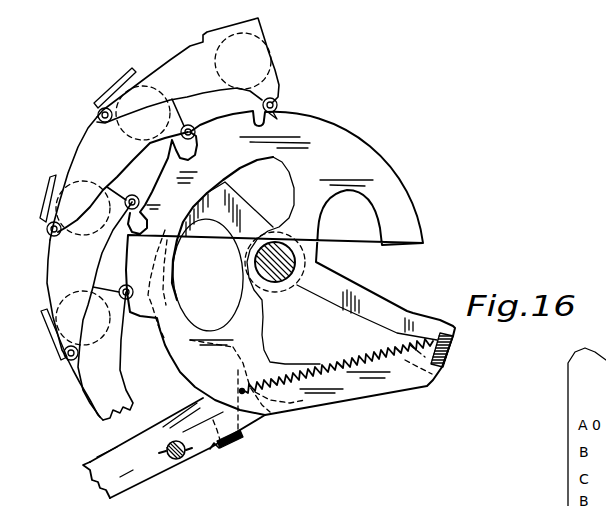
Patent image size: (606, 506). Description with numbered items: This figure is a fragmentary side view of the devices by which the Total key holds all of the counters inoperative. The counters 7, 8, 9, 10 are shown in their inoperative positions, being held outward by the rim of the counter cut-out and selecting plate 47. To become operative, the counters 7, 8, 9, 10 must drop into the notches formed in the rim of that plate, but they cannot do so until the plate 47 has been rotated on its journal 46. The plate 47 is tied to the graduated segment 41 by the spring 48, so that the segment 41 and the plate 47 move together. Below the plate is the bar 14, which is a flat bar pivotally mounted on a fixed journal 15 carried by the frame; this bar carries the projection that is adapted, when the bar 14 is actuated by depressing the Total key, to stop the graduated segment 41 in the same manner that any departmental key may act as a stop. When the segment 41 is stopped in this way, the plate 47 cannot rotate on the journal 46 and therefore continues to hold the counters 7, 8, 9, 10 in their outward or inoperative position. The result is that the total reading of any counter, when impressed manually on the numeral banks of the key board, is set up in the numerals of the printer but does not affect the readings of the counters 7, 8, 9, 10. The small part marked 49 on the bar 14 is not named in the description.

The counter 7 is at (186, 70).
The counter 8 is at (117, 163).
The counter 9 is at (90, 299).
The counter 10 is at (94, 352).
The bar 14 is at (88, 463).
The fixed journal 15 is at (183, 460).
The graduated segment 41 is at (233, 233).
The journal 46 is at (305, 257).
The counter cut-out and selecting plate 47 is at (345, 147).
The spring 48 is at (328, 363).
The projection 49 is at (218, 448).